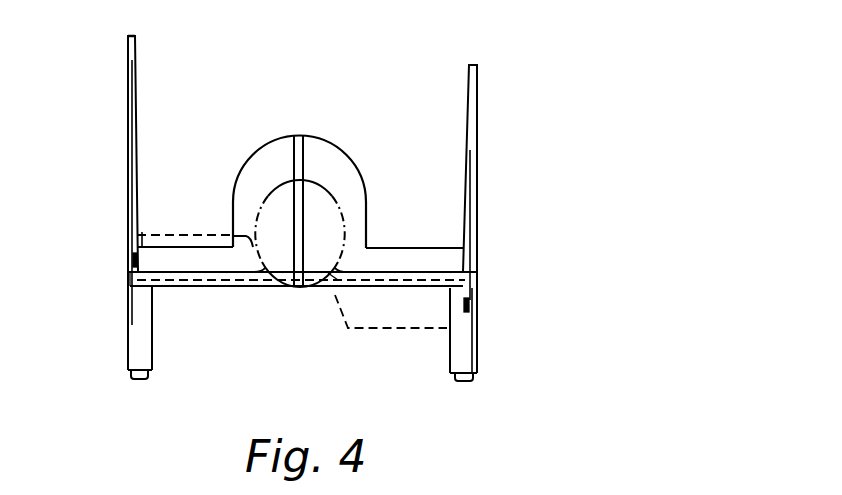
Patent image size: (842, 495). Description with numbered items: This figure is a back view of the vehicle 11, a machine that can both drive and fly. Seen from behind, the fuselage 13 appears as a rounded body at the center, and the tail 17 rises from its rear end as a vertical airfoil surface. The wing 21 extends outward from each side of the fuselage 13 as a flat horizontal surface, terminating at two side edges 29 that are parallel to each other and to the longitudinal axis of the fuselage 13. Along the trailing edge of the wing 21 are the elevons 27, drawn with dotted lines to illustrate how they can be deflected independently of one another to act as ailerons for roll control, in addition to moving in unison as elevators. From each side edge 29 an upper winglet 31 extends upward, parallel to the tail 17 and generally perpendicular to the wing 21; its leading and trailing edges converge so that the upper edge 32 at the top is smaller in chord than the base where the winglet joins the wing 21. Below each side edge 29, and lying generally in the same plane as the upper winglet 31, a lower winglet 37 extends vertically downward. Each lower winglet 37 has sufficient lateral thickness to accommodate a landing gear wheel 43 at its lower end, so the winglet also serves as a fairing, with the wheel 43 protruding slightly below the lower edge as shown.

The vehicle 11 is at (535, 165).
The fuselage 13 is at (330, 163).
The tail 17 is at (300, 226).
The wing 21 is at (422, 260).
The elevons 27 is at (158, 240).
The side edges 29 is at (477, 268).
The upper winglet 31 is at (137, 152).
The upper edge 32 is at (128, 62).
The lower winglet 37 is at (137, 350).
The landing gear wheel 43 is at (147, 375).